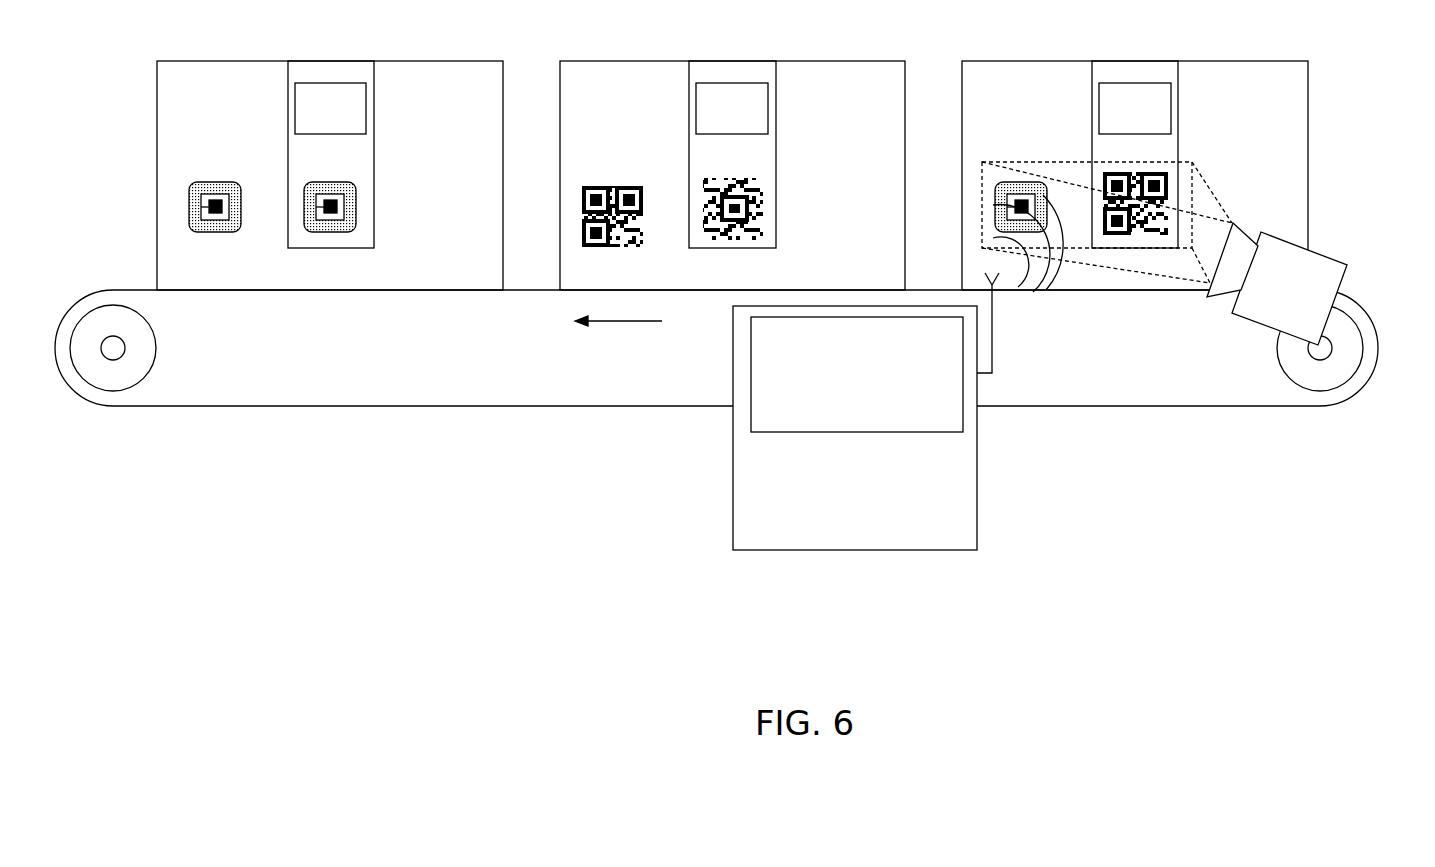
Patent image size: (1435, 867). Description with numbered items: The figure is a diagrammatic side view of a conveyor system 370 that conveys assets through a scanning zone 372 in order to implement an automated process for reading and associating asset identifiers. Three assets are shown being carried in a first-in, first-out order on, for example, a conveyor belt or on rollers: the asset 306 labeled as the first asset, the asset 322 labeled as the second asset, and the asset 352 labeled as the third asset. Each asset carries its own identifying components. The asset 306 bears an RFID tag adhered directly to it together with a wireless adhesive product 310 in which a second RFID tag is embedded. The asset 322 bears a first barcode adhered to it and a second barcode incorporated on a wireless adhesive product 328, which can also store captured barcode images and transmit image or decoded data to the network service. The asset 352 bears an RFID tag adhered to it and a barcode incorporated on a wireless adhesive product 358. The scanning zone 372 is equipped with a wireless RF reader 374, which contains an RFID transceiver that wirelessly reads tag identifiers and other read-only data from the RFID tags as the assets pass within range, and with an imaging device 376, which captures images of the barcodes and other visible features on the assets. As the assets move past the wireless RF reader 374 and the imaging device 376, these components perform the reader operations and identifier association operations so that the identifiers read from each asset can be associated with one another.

The asset 306 is at (330, 148).
The wireless adhesive product 310 is at (366, 110).
The asset 322 is at (732, 148).
The wireless adhesive product 328 is at (768, 110).
The asset 352 is at (1135, 149).
The wireless adhesive product 358 is at (1171, 110).
The conveyor system 370 is at (716, 408).
The scanning zone 372 is at (365, 291).
The wireless RF reader 374 is at (733, 507).
The imaging device 376 is at (1333, 257).